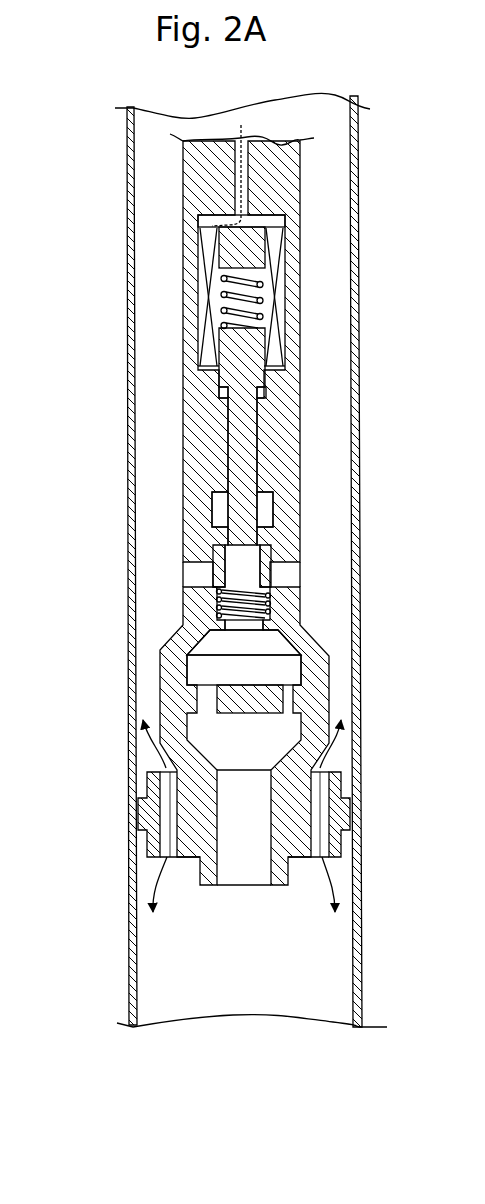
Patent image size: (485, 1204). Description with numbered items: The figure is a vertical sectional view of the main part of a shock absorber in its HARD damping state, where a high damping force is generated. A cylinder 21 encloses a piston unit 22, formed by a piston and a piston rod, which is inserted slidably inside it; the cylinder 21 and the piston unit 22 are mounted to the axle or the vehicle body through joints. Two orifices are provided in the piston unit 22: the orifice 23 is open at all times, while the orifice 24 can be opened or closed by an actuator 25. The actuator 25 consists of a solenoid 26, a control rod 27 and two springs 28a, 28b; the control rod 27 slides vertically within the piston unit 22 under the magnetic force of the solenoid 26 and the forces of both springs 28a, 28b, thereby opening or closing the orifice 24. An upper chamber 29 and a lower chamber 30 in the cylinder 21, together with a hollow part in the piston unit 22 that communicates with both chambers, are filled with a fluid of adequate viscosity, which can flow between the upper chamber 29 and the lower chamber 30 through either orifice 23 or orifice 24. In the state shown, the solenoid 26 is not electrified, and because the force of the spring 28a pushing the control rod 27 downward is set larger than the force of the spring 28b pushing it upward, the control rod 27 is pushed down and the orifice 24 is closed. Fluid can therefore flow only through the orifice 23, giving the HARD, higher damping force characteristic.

The cylinder 21 is at (358, 333).
The piston unit 22 is at (333, 675).
The orifice 23 is at (326, 800).
The orifice 24 is at (198, 667).
The actuator 25 is at (272, 388).
The solenoid 26 is at (277, 268).
The control rod 27 is at (243, 460).
The spring 28a is at (219, 289).
The spring 28b is at (217, 612).
The upper chamber 29 is at (345, 523).
The lower chamber 30 is at (262, 978).